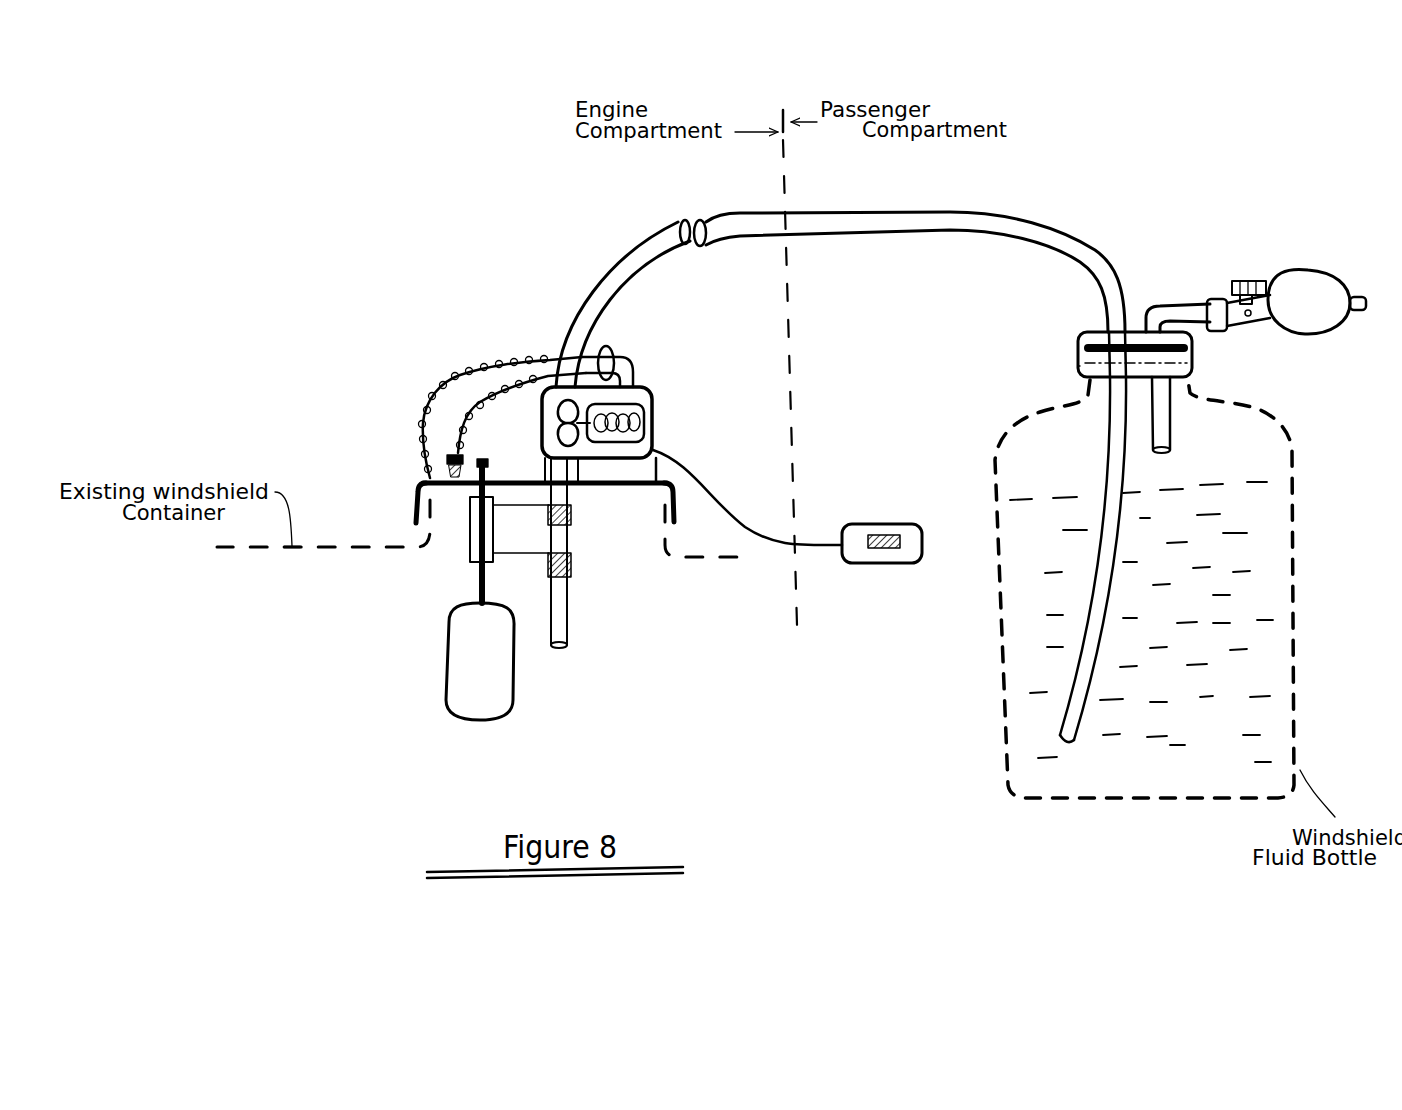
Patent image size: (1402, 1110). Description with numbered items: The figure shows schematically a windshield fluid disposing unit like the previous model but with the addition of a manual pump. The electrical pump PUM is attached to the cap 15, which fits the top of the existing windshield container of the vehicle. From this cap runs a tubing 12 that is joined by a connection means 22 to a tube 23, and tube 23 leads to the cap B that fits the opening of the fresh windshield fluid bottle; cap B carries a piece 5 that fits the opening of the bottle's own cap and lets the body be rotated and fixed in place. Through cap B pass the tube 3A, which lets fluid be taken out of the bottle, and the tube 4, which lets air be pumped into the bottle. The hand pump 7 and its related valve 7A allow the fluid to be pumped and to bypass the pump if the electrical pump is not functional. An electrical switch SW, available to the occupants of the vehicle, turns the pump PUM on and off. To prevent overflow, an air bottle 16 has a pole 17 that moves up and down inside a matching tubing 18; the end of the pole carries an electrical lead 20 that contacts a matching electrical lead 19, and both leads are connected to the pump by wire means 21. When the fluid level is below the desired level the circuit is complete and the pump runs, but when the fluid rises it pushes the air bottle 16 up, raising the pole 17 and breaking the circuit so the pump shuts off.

The tube 3A is at (1092, 595).
The tube 4 is at (1172, 420).
The piece 5 is at (1193, 349).
The hand pump 7 is at (1315, 335).
The valve 7A is at (1245, 280).
The cap B is at (1077, 366).
The tubing 12 is at (592, 288).
The cap 15 is at (413, 498).
The air bottle 16 is at (446, 679).
The pole 17 is at (478, 594).
The tubing 18 is at (469, 553).
The electrical lead 19 is at (447, 461).
The electrical lead 20 is at (447, 457).
The wire means 21 is at (607, 347).
The connection means 22 is at (707, 218).
The tube 23 is at (953, 233).
The pump PUM is at (656, 425).
The electrical switch SW is at (873, 563).